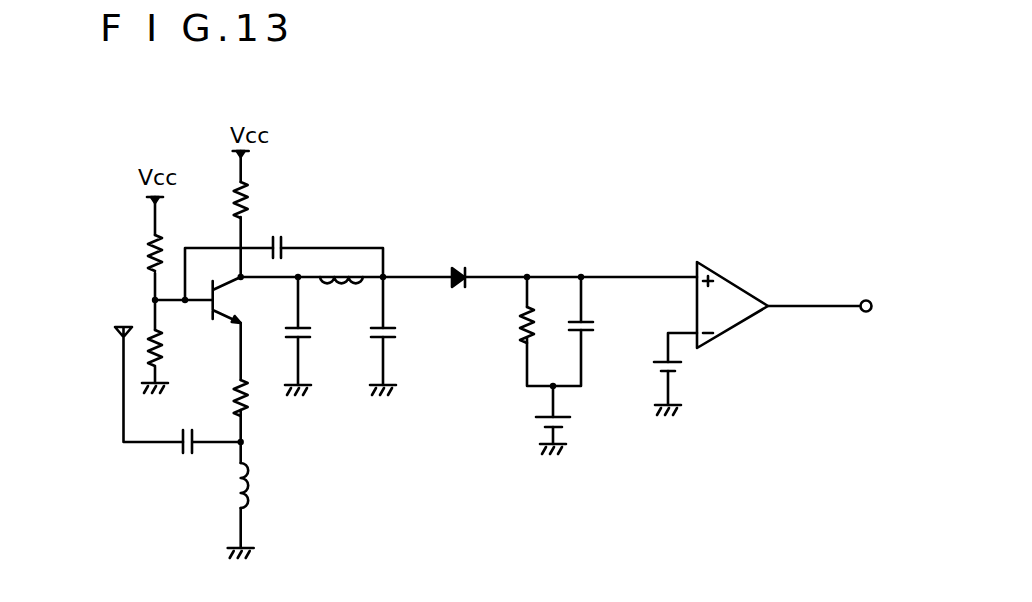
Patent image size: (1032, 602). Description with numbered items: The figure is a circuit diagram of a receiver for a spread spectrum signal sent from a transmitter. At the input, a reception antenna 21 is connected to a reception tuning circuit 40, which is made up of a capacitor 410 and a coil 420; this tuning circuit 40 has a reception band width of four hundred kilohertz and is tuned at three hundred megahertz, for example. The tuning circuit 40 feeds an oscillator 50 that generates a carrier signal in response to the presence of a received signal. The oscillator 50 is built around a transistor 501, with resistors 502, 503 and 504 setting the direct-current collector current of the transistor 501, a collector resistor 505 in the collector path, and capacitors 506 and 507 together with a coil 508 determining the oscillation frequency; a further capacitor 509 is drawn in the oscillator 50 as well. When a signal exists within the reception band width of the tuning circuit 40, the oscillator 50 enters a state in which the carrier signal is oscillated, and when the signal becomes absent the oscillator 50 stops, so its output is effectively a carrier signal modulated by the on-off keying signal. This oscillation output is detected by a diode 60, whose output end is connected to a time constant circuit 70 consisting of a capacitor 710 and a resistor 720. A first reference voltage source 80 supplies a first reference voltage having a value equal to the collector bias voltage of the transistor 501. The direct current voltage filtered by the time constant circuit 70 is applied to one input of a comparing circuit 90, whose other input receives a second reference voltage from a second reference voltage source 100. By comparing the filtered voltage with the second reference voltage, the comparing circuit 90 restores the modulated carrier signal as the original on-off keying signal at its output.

The reception antenna 21 is at (117, 334).
The reception tuning circuit 40 is at (248, 453).
The capacitor 410 is at (188, 428).
The coil 420 is at (225, 467).
The oscillator 50 is at (270, 323).
The transistor 501 is at (222, 302).
The resistor 502 is at (148, 254).
The resistor 503 is at (163, 348).
The resistor 504 is at (247, 396).
The collector resistor 505 is at (252, 200).
The capacitor 506 is at (303, 337).
The capacitor 507 is at (393, 334).
The coil 508 is at (342, 279).
The capacitor 509 is at (283, 235).
The diode 60 is at (452, 265).
The time constant circuit 70 is at (550, 368).
The capacitor 710 is at (618, 309).
The resistor 720 is at (517, 320).
The first reference voltage source 80 is at (537, 420).
The comparing circuit 90 is at (743, 285).
The second reference voltage source 100 is at (680, 366).